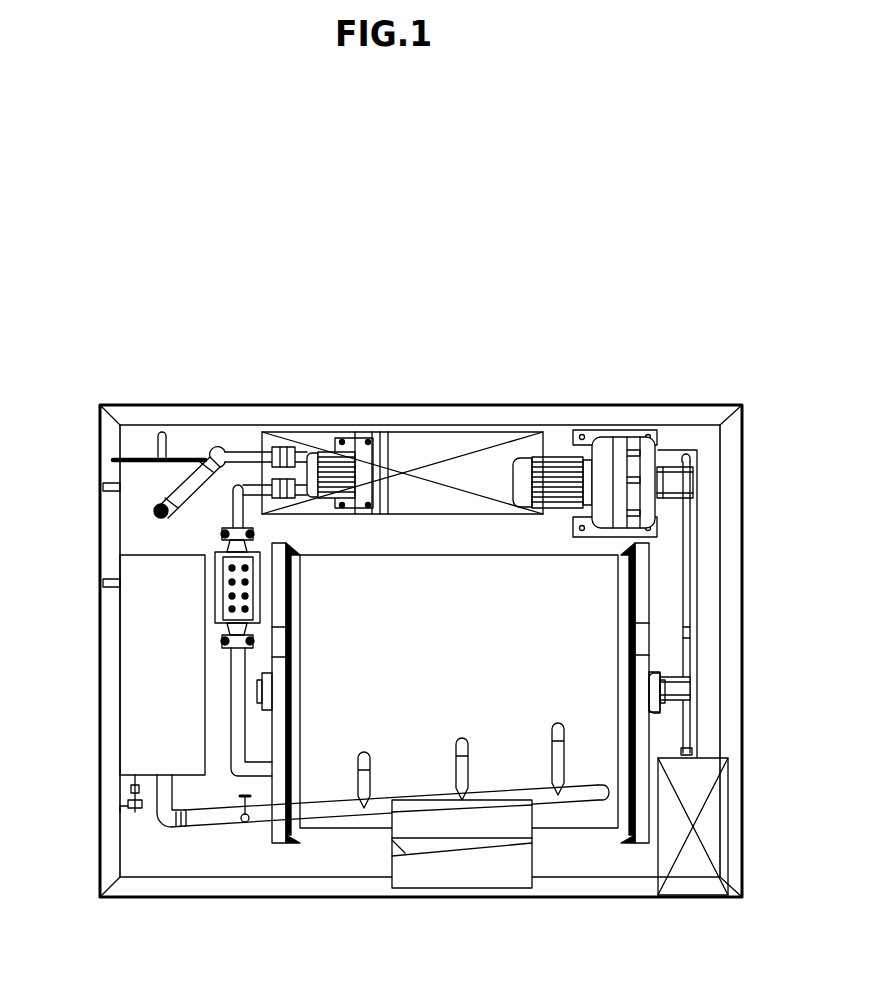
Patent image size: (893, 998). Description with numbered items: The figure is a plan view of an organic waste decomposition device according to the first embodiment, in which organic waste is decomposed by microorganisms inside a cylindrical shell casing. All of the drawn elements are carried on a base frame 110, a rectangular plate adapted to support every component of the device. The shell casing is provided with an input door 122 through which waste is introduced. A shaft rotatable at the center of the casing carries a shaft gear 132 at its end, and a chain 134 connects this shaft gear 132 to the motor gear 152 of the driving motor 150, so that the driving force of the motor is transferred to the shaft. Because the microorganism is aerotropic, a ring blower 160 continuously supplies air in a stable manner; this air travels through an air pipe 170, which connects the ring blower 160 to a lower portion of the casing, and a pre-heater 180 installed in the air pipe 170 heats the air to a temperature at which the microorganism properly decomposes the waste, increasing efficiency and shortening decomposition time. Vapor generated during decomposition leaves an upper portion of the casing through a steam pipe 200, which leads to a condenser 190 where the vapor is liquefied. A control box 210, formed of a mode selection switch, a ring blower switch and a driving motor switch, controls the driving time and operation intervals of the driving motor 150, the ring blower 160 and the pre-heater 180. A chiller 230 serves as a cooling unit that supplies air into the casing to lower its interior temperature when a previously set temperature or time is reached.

The base frame 110 is at (140, 862).
The input door 122 is at (412, 847).
The shaft gear 132 is at (686, 722).
The chain 134 is at (687, 572).
The driving motor 150 is at (633, 450).
The motor gear 152 is at (690, 458).
The ring blower 160 is at (327, 452).
The air pipe 170 is at (238, 736).
The pre-heater 180 is at (218, 580).
The condenser 190 is at (147, 693).
The steam pipe 200 is at (573, 796).
The control box 210 is at (707, 813).
The chiller 230 is at (418, 438).